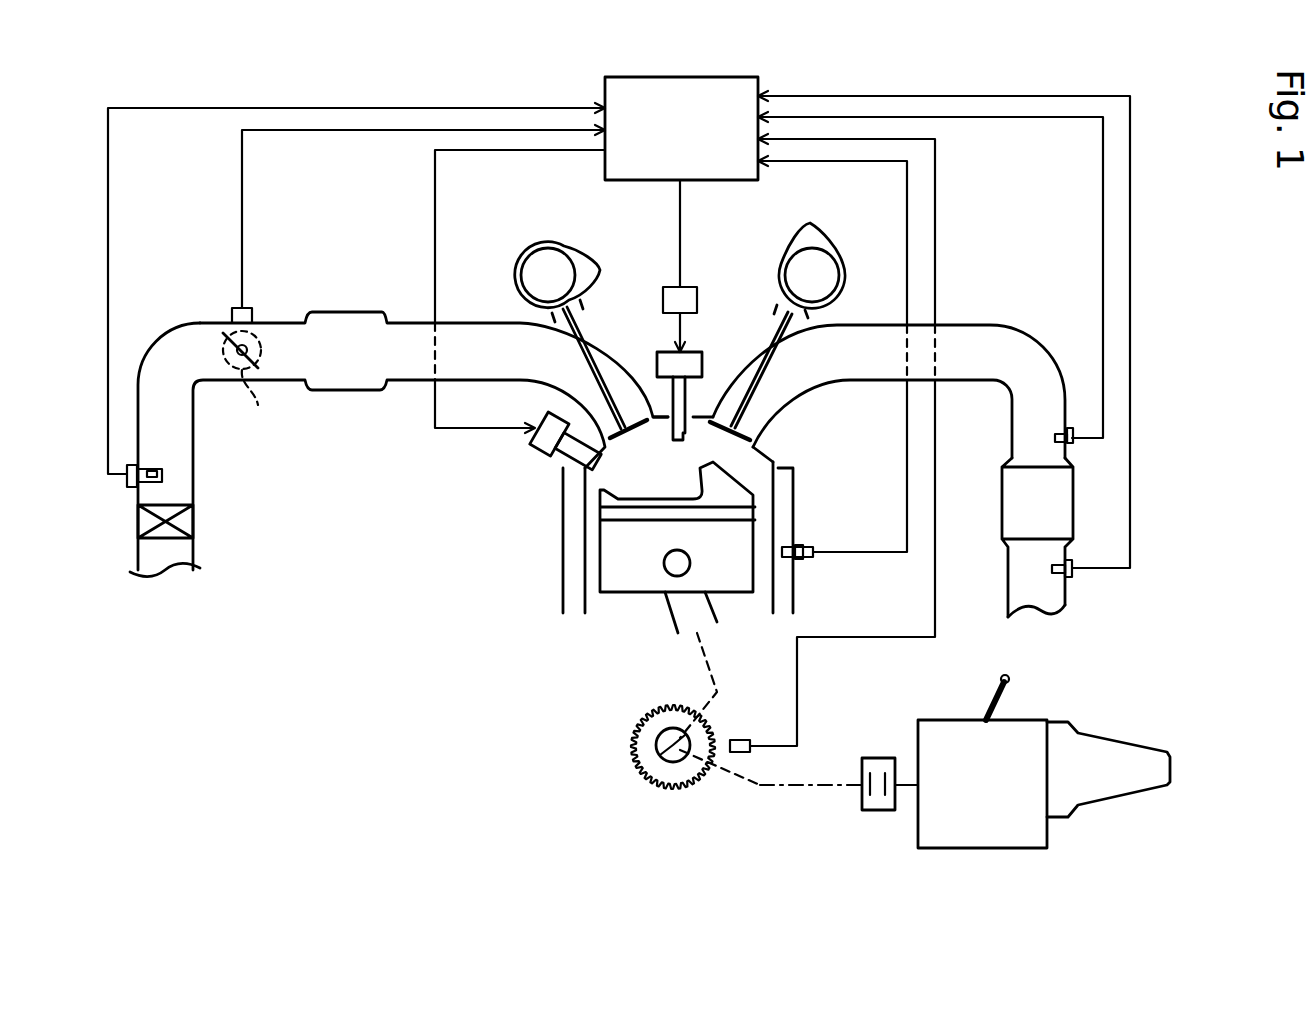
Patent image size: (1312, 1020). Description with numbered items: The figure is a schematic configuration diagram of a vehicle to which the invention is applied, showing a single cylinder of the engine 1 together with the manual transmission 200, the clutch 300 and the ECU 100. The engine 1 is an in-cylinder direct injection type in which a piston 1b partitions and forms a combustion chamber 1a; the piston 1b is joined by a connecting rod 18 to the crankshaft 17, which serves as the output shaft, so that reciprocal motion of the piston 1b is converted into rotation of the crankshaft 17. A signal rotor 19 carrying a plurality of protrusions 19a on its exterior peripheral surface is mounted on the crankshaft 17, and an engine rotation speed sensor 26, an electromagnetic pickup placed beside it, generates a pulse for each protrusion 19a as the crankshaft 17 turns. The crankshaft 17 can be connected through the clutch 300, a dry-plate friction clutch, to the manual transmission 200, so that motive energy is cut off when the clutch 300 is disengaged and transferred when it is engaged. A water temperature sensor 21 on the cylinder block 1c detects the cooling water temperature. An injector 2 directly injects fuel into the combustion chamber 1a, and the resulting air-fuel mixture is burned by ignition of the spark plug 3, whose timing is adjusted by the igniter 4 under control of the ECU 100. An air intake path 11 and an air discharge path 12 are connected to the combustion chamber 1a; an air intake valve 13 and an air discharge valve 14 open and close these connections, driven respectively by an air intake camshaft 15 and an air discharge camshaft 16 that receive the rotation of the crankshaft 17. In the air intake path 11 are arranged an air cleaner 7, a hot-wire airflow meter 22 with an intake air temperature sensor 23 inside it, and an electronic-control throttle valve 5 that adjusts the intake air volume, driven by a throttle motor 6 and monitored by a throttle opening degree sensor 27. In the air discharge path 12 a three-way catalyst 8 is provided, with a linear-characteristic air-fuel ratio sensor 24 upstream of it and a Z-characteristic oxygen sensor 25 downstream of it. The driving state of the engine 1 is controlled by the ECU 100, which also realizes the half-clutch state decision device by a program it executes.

The engine 1 is at (632, 556).
The combustion chamber 1a is at (627, 527).
The piston 1b is at (559, 579).
The cylinder block 1c is at (828, 601).
The injector 2 is at (552, 460).
The spark plug 3 is at (694, 385).
The igniter 4 is at (694, 293).
The throttle valve 5 is at (221, 313).
The throttle motor 6 is at (256, 406).
The air cleaner 7 is at (201, 534).
The three-way catalyst 8 is at (1008, 537).
The air intake path 11 is at (399, 444).
The air discharge path 12 is at (889, 391).
The air intake valve 13 is at (599, 368).
The air discharge valve 14 is at (759, 364).
The air intake camshaft 15 is at (537, 255).
The air discharge camshaft 16 is at (835, 255).
The crankshaft 17 is at (718, 773).
The connecting rod 18 is at (658, 665).
The signal rotor 19 is at (633, 746).
The protrusions 19a is at (716, 824).
The water temperature sensor 21 is at (820, 524).
The airflow meter 22 is at (111, 514).
The intake air temperature sensor 23 is at (207, 487).
The air-fuel ratio sensor 24 is at (1084, 471).
The oxygen sensor 25 is at (1083, 596).
The engine rotation speed sensor 26 is at (756, 713).
The throttle opening degree sensor 27 is at (270, 286).
The ECU 100 is at (619, 379).
The manual transmission 200 is at (1044, 745).
The clutch 300 is at (871, 752).